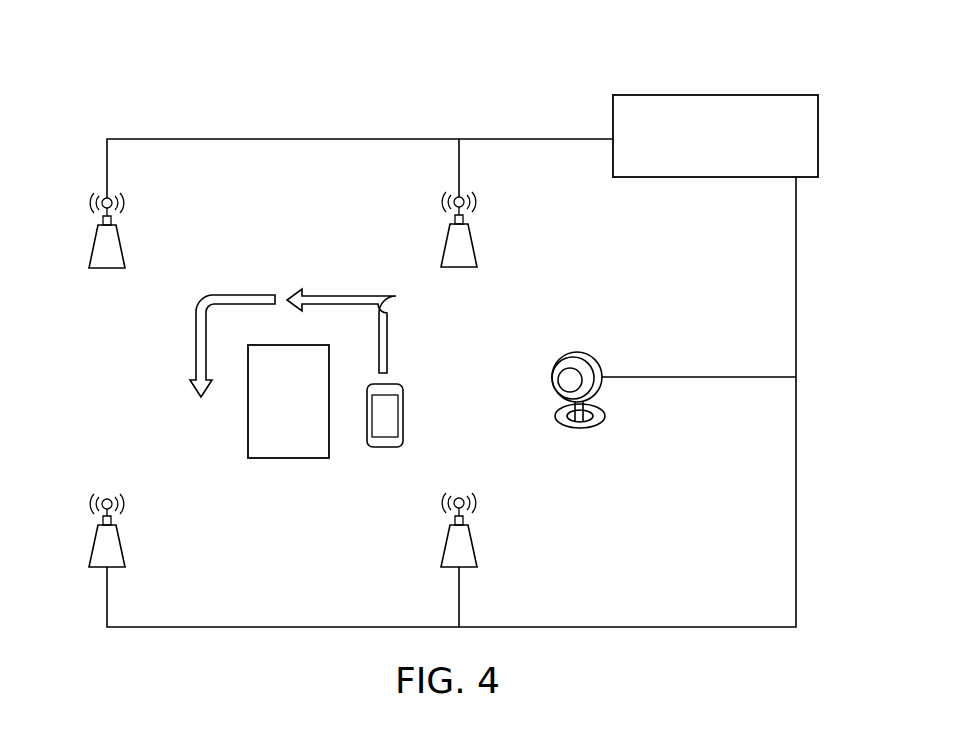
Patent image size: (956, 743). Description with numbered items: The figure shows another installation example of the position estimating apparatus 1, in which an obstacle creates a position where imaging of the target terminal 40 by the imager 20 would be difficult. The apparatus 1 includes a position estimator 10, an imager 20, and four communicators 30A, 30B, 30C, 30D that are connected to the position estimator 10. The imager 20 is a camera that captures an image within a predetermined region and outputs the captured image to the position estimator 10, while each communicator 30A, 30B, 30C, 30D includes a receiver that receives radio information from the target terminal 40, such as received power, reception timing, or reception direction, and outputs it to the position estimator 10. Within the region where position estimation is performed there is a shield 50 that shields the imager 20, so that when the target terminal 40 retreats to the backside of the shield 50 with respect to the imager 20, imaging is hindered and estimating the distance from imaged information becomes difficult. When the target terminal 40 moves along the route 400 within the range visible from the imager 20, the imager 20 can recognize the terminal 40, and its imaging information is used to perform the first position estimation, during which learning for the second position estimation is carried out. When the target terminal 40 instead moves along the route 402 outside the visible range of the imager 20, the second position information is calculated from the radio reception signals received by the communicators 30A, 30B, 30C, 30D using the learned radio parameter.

The position estimating apparatus 1 is at (184, 105).
The position estimator 10 is at (738, 93).
The imager 20 is at (597, 356).
The communicator 30A is at (121, 245).
The communicator 30B is at (473, 244).
The communicator 30C is at (121, 546).
The communicator 30D is at (473, 546).
The target terminal 40 is at (404, 416).
The shield 50 is at (287, 460).
The route 400 is at (390, 337).
The route 402 is at (196, 340).